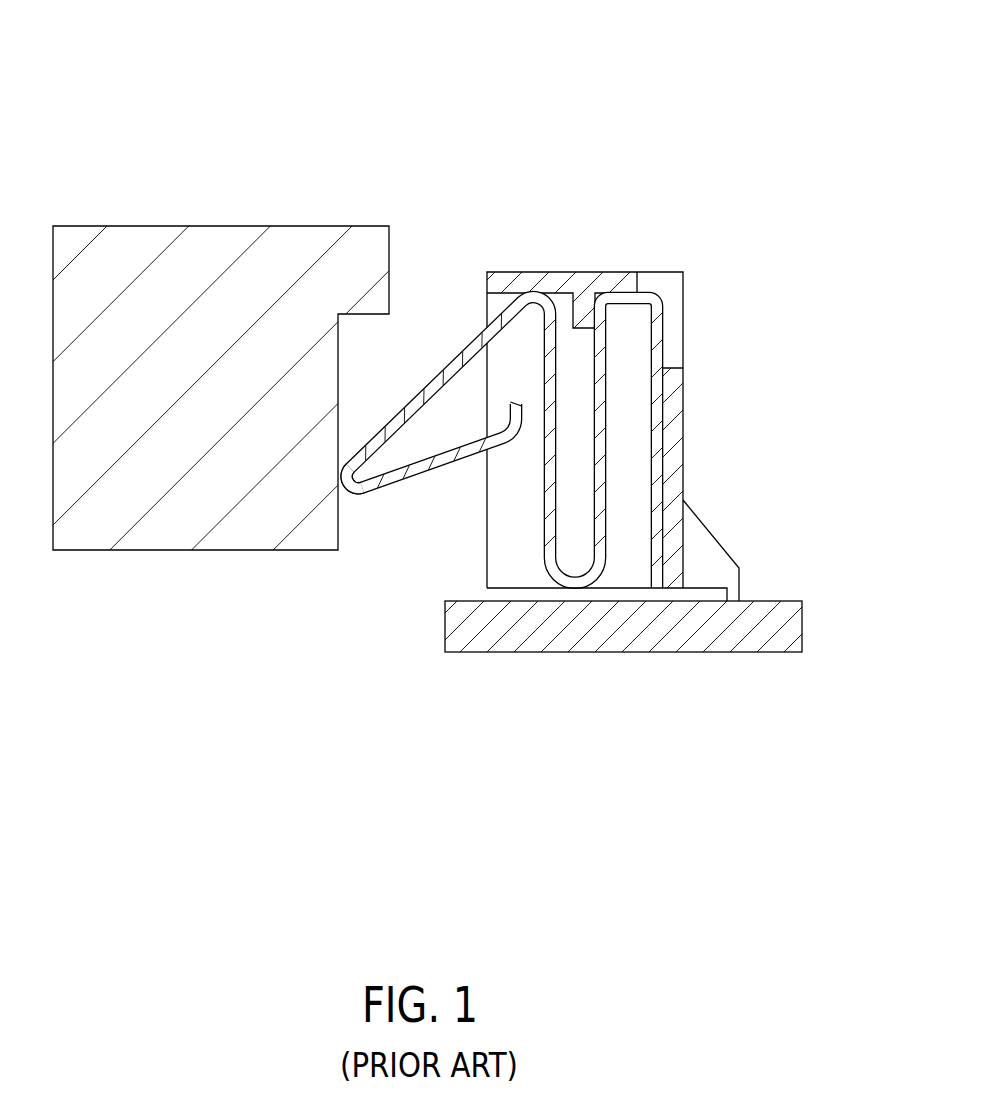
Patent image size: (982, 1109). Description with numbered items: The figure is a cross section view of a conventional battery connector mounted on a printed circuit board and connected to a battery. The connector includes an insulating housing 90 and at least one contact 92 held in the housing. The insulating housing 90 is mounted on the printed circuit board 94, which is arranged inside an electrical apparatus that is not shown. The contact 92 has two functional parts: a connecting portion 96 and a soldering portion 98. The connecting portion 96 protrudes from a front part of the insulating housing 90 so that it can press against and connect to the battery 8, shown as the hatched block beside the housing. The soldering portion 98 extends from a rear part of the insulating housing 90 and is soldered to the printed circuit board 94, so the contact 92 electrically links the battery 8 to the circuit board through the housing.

The battery 8 is at (308, 225).
The insulating housing 90 is at (602, 282).
The contact 92 is at (452, 357).
The printed circuit board 94 is at (802, 601).
The connecting portion 96 is at (392, 485).
The soldering portion 98 is at (705, 597).